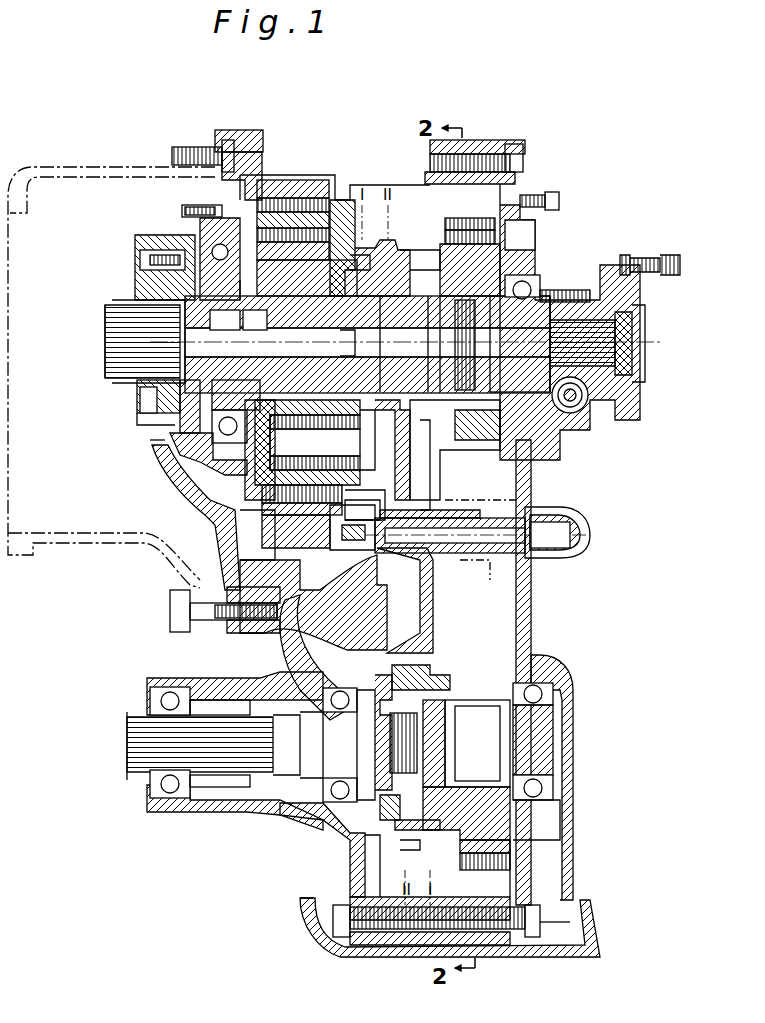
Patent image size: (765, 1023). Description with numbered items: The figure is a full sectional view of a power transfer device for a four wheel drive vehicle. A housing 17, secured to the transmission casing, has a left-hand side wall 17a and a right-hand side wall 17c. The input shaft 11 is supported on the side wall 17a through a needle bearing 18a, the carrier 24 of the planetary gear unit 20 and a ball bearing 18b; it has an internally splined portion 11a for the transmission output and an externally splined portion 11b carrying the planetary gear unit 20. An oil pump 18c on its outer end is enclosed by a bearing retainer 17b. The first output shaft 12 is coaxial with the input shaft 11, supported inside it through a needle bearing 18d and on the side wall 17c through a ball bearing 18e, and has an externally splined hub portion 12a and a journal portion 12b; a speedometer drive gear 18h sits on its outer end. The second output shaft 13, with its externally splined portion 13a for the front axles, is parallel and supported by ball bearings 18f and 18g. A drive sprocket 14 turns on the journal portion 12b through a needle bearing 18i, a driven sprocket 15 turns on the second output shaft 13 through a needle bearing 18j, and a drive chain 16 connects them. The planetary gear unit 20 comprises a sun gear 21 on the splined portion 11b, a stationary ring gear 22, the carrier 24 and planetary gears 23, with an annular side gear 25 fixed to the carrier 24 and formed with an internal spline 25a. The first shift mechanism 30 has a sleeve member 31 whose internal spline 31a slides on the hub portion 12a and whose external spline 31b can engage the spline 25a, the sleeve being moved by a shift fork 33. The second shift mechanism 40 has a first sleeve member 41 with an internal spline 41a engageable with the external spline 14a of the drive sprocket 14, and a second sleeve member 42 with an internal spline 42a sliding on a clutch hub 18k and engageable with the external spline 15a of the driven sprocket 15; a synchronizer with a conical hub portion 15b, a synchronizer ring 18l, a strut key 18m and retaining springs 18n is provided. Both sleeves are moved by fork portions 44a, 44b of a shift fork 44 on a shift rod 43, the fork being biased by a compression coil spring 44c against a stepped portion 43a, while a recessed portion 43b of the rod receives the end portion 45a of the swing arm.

The input shaft 11 is at (125, 377).
The internally splined portion 11a is at (115, 333).
The externally splined portion 11b is at (405, 344).
The first output shaft 12 is at (640, 348).
The externally splined hub portion 12a is at (395, 344).
The journal portion 12b is at (520, 344).
The second output shaft 13 is at (125, 738).
The externally splined portion 13a is at (140, 775).
The drive sprocket 14 is at (475, 445).
The external spline 14a is at (425, 265).
The driven sprocket 15 is at (485, 650).
The external spline 15a is at (450, 840).
The conical hub portion 15b is at (440, 805).
The drive chain 16 is at (470, 222).
The housing 17 is at (300, 645).
The left-hand side wall 17a is at (222, 462).
The bearing retainer 17b is at (190, 490).
The right-hand side wall 17c is at (530, 462).
The needle bearing 18a is at (254, 331).
The ball bearing 18b is at (215, 435).
The oil pump 18c is at (176, 252).
The needle bearing 18d is at (225, 331).
The ball bearing 18e is at (528, 288).
The ball bearing 18f is at (340, 800).
The ball bearing 18g is at (540, 682).
The drive gear for a speedometer 18h is at (560, 290).
The needle bearing 18i is at (471, 345).
The needle bearing 18j is at (478, 705).
The clutch hub 18k is at (385, 812).
The synchronizer ring 18l is at (420, 665).
The strut key 18m is at (372, 680).
The retaining springs 18n is at (395, 675).
The planetary gear unit 20 is at (340, 195).
The sun gear 21 is at (302, 450).
The stationary ring gear 22 is at (298, 205).
The planet gear 23 is at (300, 225).
The carrier 24 is at (190, 418).
The annular side gear 25 is at (352, 240).
The internal spline 25a is at (368, 256).
The first shift mechanism 30 is at (392, 450).
The sleeve member 31 is at (400, 420).
The internal spline 31a is at (352, 343).
The external spline 31b is at (311, 465).
The shift fork 33 is at (442, 457).
The second shift mechanism 40 is at (405, 565).
The first sleeve member 41 is at (382, 264).
The internal spline 41a is at (438, 344).
The second sleeve member 42 is at (402, 832).
The internal spline 42a is at (408, 860).
The shift rod 43 is at (472, 550).
The stepped portion 43a is at (322, 550).
The recessed portion 43b is at (350, 488).
The shift fork 44 is at (445, 505).
The fork portion 44a is at (406, 465).
The fork portion 44b is at (425, 570).
The compression coil spring 44c is at (479, 584).
The one end portion of swing arm 45a is at (358, 548).